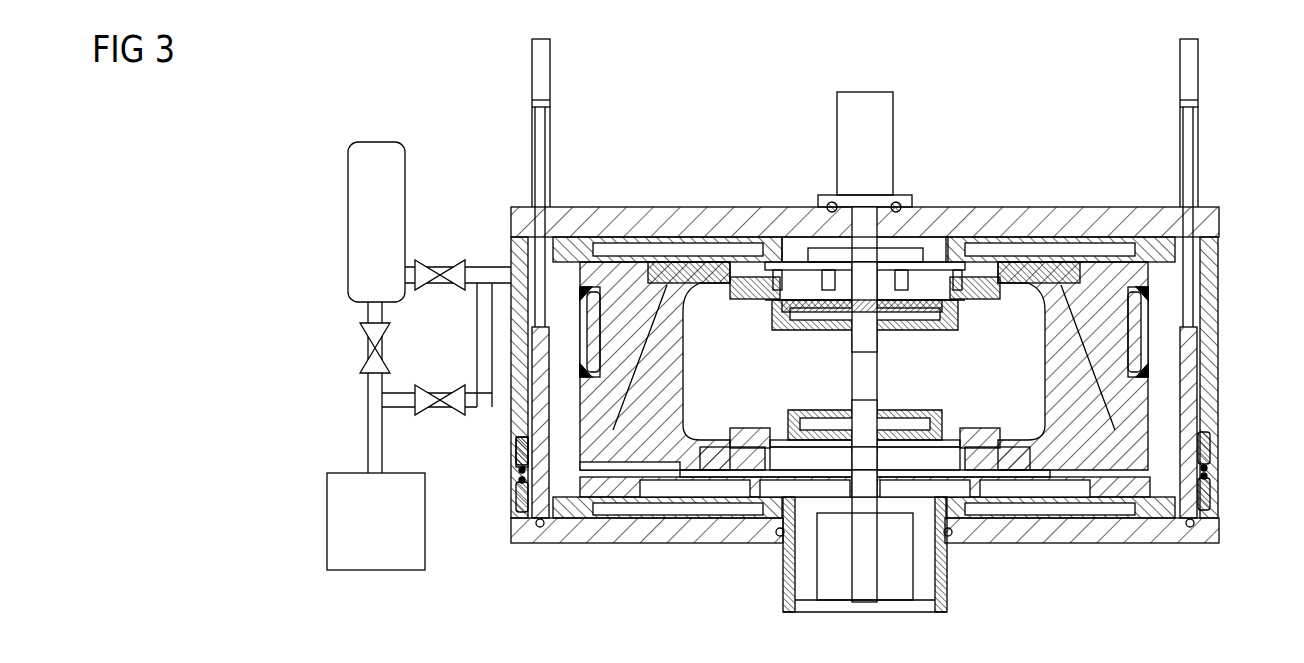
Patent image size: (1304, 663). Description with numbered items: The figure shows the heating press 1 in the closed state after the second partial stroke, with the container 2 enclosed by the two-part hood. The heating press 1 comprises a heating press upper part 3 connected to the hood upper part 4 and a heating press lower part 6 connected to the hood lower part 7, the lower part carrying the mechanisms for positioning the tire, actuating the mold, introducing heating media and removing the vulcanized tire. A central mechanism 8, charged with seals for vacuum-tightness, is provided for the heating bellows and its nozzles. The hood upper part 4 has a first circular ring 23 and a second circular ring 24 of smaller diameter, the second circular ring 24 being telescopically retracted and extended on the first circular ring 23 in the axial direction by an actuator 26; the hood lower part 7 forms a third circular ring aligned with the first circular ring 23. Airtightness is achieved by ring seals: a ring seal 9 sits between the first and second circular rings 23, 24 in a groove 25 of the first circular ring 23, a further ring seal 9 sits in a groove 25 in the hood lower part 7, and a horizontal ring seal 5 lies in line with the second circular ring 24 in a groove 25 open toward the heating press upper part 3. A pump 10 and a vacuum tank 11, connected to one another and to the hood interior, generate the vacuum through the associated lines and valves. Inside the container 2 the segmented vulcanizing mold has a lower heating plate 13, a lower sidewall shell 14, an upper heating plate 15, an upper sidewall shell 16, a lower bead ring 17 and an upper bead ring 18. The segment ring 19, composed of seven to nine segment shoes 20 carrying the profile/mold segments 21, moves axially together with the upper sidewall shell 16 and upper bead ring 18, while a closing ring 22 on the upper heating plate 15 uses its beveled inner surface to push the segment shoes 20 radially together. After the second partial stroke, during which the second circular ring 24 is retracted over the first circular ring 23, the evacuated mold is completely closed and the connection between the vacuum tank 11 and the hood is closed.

The heating press 1 is at (1020, 112).
The container 2 is at (1160, 418).
The heating press upper part 3 is at (628, 228).
The hood upper part 4 is at (1222, 249).
The ring seal 5 is at (540, 527).
The heating press lower part 6 is at (1118, 530).
The hood lower part 7 is at (528, 500).
The central mechanism 8 is at (885, 556).
The ring seal 9 is at (514, 452).
The pump 10 is at (327, 528).
The vacuum tank 11 is at (348, 192).
The lower heating plate 13 is at (1165, 515).
The lower sidewall shell 14 is at (668, 450).
The upper heating plate 15 is at (664, 238).
The upper sidewall shell 16 is at (1018, 300).
The lower bead ring 17 is at (748, 440).
The upper bead ring 18 is at (990, 300).
The segment ring 19 is at (530, 482).
The segment shoes 20 is at (582, 500).
The profile/mold segments 21 is at (635, 488).
The closing ring 22 is at (1110, 315).
The first circular ring 23 is at (520, 335).
The second circular ring 24 is at (1187, 363).
The groove 25 is at (514, 428).
The actuator 26 is at (1193, 128).